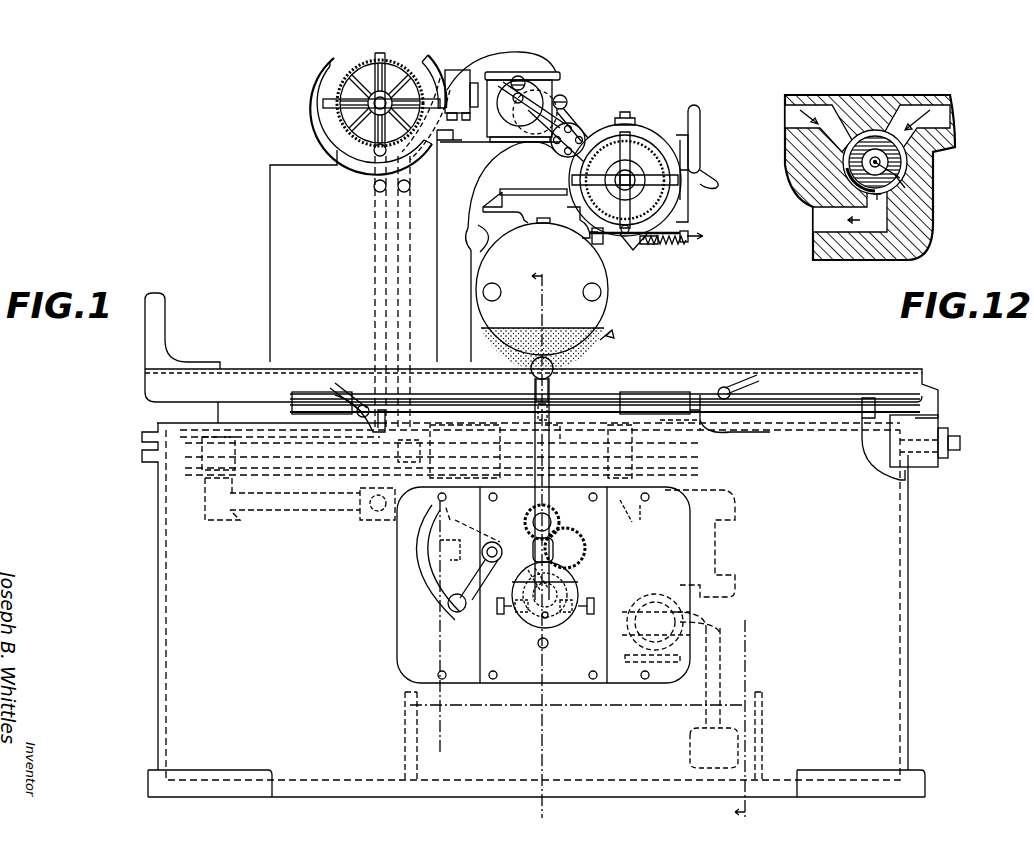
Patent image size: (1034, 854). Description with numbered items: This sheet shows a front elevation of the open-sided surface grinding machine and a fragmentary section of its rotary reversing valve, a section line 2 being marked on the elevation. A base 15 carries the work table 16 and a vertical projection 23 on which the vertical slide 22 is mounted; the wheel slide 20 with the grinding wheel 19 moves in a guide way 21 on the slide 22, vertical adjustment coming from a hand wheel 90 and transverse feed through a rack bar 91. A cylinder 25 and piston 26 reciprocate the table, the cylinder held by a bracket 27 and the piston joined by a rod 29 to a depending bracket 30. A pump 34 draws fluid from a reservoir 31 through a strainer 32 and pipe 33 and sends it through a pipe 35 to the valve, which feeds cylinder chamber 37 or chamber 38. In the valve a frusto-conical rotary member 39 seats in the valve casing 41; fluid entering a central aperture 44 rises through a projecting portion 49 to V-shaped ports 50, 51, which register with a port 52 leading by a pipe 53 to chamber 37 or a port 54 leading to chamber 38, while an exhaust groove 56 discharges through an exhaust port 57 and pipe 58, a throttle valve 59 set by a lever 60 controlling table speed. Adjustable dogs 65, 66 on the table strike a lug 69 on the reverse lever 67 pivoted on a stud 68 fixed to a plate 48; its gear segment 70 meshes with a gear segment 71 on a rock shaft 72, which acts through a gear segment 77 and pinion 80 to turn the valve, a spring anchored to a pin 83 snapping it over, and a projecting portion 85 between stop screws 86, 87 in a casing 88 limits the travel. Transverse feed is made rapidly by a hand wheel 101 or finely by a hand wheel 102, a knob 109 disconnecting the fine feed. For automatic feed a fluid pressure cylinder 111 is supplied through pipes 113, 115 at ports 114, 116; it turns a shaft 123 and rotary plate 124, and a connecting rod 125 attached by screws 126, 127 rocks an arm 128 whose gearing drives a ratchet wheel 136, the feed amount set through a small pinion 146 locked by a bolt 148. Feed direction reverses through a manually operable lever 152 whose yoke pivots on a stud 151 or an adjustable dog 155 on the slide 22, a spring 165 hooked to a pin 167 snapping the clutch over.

In FIG. 1, the section line 2 is at (638, 545).
In FIG. 1, the base 15 is at (175, 548).
In FIG. 1, the work table 16 is at (246, 378).
In FIG. 1, the grinding wheel 19 is at (520, 340).
In FIG. 1, the wheel slide 20 is at (540, 210).
In FIG. 1, the guide way 21 is at (490, 200).
In FIG. 1, the vertical slide 22 is at (450, 265).
In FIG. 1, the vertical projection 23 is at (270, 256).
In FIG. 1, the cylinder 25 is at (585, 428).
In FIG. 1, the piston 26 is at (440, 380).
In FIG. 1, the bracket 27 is at (645, 428).
In FIG. 1, the rod 29 is at (876, 430).
In FIG. 1, the depending bracket 30 is at (925, 432).
In FIG. 1, the reservoir 31 is at (418, 725).
In FIG. 1, the strainer 32 is at (698, 742).
In FIG. 1, the pipe 33 is at (718, 662).
In FIG. 1, the pump 34 is at (700, 620).
In FIG. 1, the pipe 35 is at (590, 628).
In FIG. 1, the cylinder chamber 37 is at (278, 445).
In FIG. 1, the cylinder chamber 38 is at (470, 430).
In FIG. 12, the rotary member 39 is at (852, 150).
In FIG. 1, the valve casing 41 is at (655, 512).
In FIG. 12, the valve casing 41 is at (935, 215).
In FIG. 12, the central aperture 44 is at (885, 168).
In FIG. 1, the plate 48 is at (527, 683).
In FIG. 12, the upwardly projecting portion 49 is at (880, 150).
In FIG. 12, the V-shaped port 50 is at (862, 140).
In FIG. 12, the V-shaped port 51 is at (890, 140).
In FIG. 12, the port 52 is at (808, 112).
In FIG. 1, the pipe 53 is at (268, 508).
In FIG. 12, the port 54 is at (940, 118).
In FIG. 12, the exhaust groove 56 is at (903, 186).
In FIG. 12, the exhaust port 57 is at (828, 220).
In FIG. 1, the pipe 58 is at (440, 648).
In FIG. 1, the throttle valve 59 is at (482, 550).
In FIG. 1, the lever 60 is at (460, 612).
In FIG. 1, the adjustable dog 65 is at (372, 432).
In FIG. 1, the adjustable dog 66 is at (713, 398).
In FIG. 1, the reverse lever 67 is at (534, 388).
In FIG. 1, the stud 68 is at (534, 545).
In FIG. 1, the lug 69 is at (551, 398).
In FIG. 1, the gear segment 70 is at (565, 565).
In FIG. 1, the gear segment 71 is at (577, 582).
In FIG. 1, the rock shaft 72 is at (532, 571).
In FIG. 1, the gear segment 77 is at (568, 530).
In FIG. 1, the pinion 80 is at (534, 522).
In FIG. 1, the pin 83 is at (539, 646).
In FIG. 1, the projecting portion 85 is at (525, 612).
In FIG. 1, the stop screw 86 is at (500, 614).
In FIG. 1, the stop screw 87 is at (595, 605).
In FIG. 1, the casing 88 is at (548, 616).
In FIG. 1, the hand wheel 90 is at (320, 91).
In FIG. 1, the rack bar 91 is at (534, 192).
In FIG. 1, the hand wheel 101 is at (640, 130).
In FIG. 1, the hand wheel 102 is at (694, 104).
In FIG. 1, the knob 109 is at (635, 182).
In FIG. 1, the fluid pressure cylinder 111 is at (585, 116).
In FIG. 1, the pipe 113 is at (380, 272).
In FIG. 1, the port 114 is at (545, 118).
In FIG. 1, the pipe 115 is at (402, 312).
In FIG. 1, the port 116 is at (567, 100).
In FIG. 1, the shaft 123 is at (500, 97).
In FIG. 1, the rotary plate 124 is at (512, 102).
In FIG. 1, the connecting rod 125 is at (517, 115).
In FIG. 1, the screw 126 is at (527, 83).
In FIG. 1, the screw 127 is at (560, 152).
In FIG. 1, the arm 128 is at (583, 126).
In FIG. 1, the ratchet wheel 136 is at (645, 145).
In FIG. 1, the small pinion 146 is at (625, 248).
In FIG. 1, the bolt 148 is at (648, 244).
In FIG. 1, the stud 151 is at (685, 244).
In FIG. 1, the manually operable lever 152 is at (714, 232).
In FIG. 1, the adjustable dog 155 is at (594, 236).
In FIG. 1, the spring 165 is at (618, 240).
In FIG. 1, the pin 167 is at (690, 240).